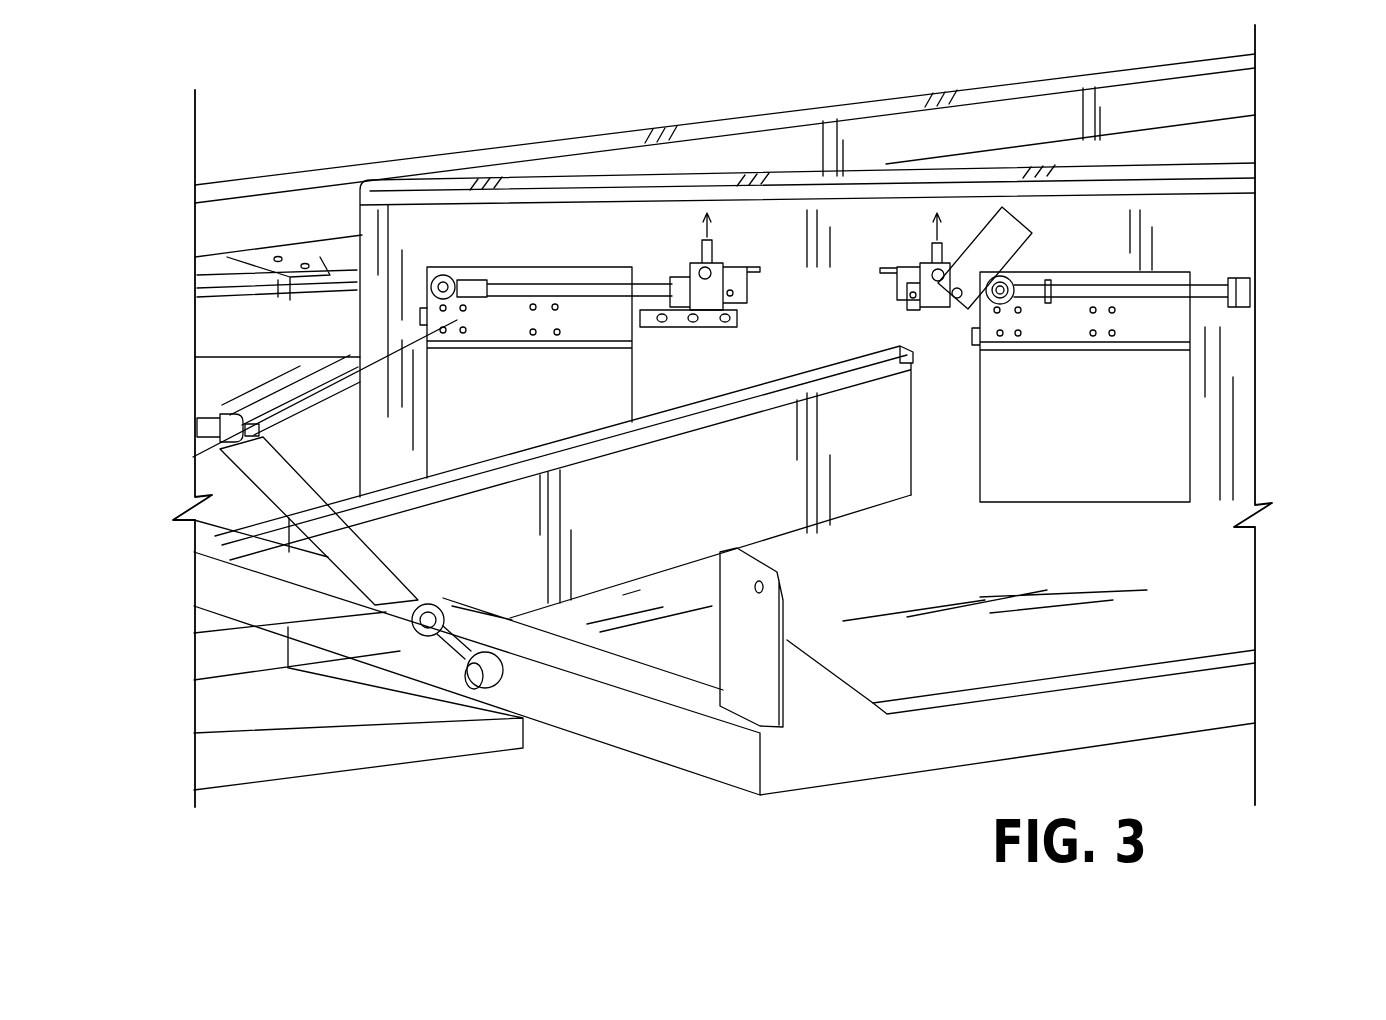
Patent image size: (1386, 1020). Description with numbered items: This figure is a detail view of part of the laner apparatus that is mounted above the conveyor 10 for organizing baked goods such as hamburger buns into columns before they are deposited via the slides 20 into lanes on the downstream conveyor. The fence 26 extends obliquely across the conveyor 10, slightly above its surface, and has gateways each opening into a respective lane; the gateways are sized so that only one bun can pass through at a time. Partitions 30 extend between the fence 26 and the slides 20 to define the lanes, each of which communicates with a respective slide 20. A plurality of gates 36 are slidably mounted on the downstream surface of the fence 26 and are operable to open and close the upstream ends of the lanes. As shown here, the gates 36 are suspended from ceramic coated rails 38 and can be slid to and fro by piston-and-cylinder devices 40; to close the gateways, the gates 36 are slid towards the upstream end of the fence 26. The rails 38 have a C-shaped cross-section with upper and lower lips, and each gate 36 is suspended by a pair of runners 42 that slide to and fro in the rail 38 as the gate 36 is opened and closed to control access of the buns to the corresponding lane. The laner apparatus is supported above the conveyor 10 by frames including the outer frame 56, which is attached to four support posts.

The conveyor 10 is at (1223, 602).
The slides 20 is at (297, 750).
The fence 26 is at (400, 182).
The partitions 30 is at (860, 505).
The gates 36 is at (450, 508).
The ceramic coated rails 38 is at (530, 385).
The piston-and-cylinder devices 40 is at (687, 273).
The runners 42 is at (210, 460).
The outer frame 56 is at (1227, 692).